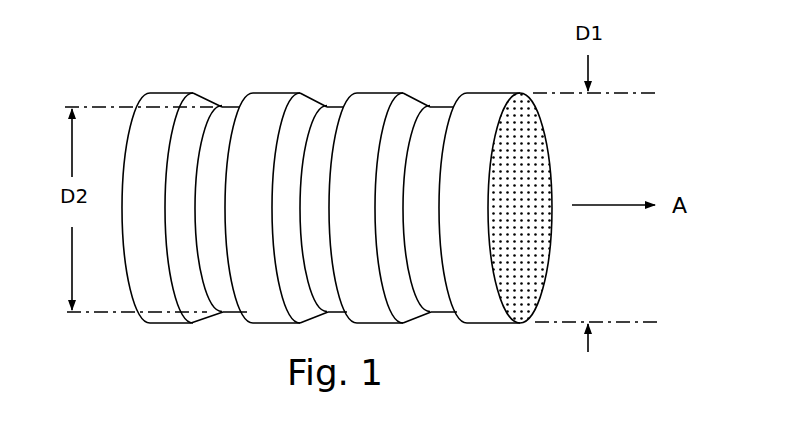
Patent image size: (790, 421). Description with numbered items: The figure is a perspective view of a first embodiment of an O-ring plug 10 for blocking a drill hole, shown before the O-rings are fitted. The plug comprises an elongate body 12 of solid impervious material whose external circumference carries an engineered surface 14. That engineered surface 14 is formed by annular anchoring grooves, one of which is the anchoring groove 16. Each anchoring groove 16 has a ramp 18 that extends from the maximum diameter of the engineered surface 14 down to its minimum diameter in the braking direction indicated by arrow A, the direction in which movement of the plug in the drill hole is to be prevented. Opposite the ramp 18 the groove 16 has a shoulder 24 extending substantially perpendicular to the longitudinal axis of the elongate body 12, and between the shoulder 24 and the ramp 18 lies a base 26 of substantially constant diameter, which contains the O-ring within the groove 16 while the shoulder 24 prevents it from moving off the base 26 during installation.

The O-ring plug 10 is at (417, 172).
The elongate body 12 is at (536, 272).
The engineered surface 14 is at (233, 78).
The annular anchoring groove 16 is at (436, 90).
The ramp 18 is at (313, 100).
The shoulder 24 is at (451, 105).
The base 26 is at (341, 105).